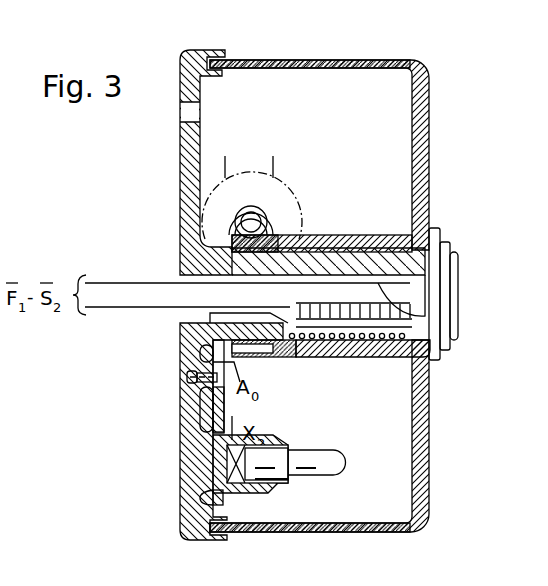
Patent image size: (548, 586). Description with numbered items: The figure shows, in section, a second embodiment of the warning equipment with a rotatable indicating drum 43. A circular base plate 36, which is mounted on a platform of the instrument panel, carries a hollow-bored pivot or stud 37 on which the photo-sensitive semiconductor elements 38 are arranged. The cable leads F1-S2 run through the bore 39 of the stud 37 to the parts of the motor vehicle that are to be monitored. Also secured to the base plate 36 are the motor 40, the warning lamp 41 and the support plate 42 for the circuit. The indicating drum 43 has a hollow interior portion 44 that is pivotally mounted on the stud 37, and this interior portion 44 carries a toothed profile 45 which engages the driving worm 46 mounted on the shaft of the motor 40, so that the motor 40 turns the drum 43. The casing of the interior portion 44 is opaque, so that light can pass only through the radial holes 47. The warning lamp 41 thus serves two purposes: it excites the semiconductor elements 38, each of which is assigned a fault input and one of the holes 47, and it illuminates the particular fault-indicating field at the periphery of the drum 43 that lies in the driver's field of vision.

The base plate 36 is at (187, 172).
The pivot or stud 37 is at (395, 258).
The semiconductor elements 38 is at (383, 325).
The bore 39 is at (403, 297).
The motor 40 is at (278, 197).
The warning lamp 41 is at (338, 466).
The support plate 42 is at (217, 407).
The indicating drum 43 is at (432, 67).
The hollow interior portion 44 is at (356, 240).
The toothed profile 45 is at (270, 350).
The driving worm 46 is at (266, 220).
The radial holes 47 is at (343, 343).